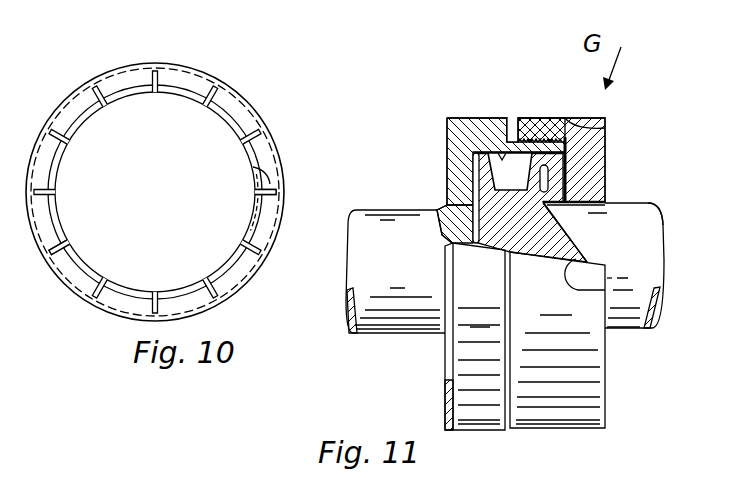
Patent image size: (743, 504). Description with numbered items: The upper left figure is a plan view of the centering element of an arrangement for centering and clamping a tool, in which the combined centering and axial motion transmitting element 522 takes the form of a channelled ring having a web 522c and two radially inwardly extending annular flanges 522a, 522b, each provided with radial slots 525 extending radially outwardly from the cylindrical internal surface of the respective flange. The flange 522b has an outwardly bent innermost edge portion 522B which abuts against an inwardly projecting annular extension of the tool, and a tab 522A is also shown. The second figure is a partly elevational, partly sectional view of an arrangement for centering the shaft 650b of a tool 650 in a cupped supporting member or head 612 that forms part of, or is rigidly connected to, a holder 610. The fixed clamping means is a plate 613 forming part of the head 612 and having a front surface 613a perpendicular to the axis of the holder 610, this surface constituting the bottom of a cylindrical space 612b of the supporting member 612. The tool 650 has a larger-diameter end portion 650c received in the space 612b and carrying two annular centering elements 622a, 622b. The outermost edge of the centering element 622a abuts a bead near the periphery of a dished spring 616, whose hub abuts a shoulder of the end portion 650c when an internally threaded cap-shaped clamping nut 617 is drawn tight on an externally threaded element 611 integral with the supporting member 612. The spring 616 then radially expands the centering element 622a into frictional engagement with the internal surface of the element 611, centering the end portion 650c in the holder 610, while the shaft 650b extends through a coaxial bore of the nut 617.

In FIG. 10, the combined centering and axial motion transmitting element 522 is at (197, 66).
In FIG. 10, the annular flange 522a is at (242, 117).
In FIG. 10, the annular flange 522b is at (262, 224).
In FIG. 10, the web 522c is at (85, 82).
In FIG. 10, the tab 522A is at (85, 273).
In FIG. 10, the outwardly bent innermost edge portion 522B is at (258, 207).
In FIG. 10, the radial slots 525 is at (205, 97).
In FIG. 11, the holder 610 is at (383, 337).
In FIG. 11, the externally threaded element 611 is at (543, 135).
In FIG. 11, the cupped supporting member or head 612 is at (467, 118).
In FIG. 11, the cylindrical space 612b is at (512, 140).
In FIG. 11, the plate 613 is at (448, 172).
In FIG. 11, the front surface 613a is at (482, 220).
In FIG. 11, the dished spring 616 is at (558, 173).
In FIG. 11, the clamping nut 617 is at (596, 403).
In FIG. 11, the centering element 622a is at (557, 157).
In FIG. 11, the centering element 622b is at (497, 152).
In FIG. 11, the tool 650 is at (625, 333).
In FIG. 11, the shaft 650b is at (652, 212).
In FIG. 11, the larger-diameter end portion 650c is at (513, 200).